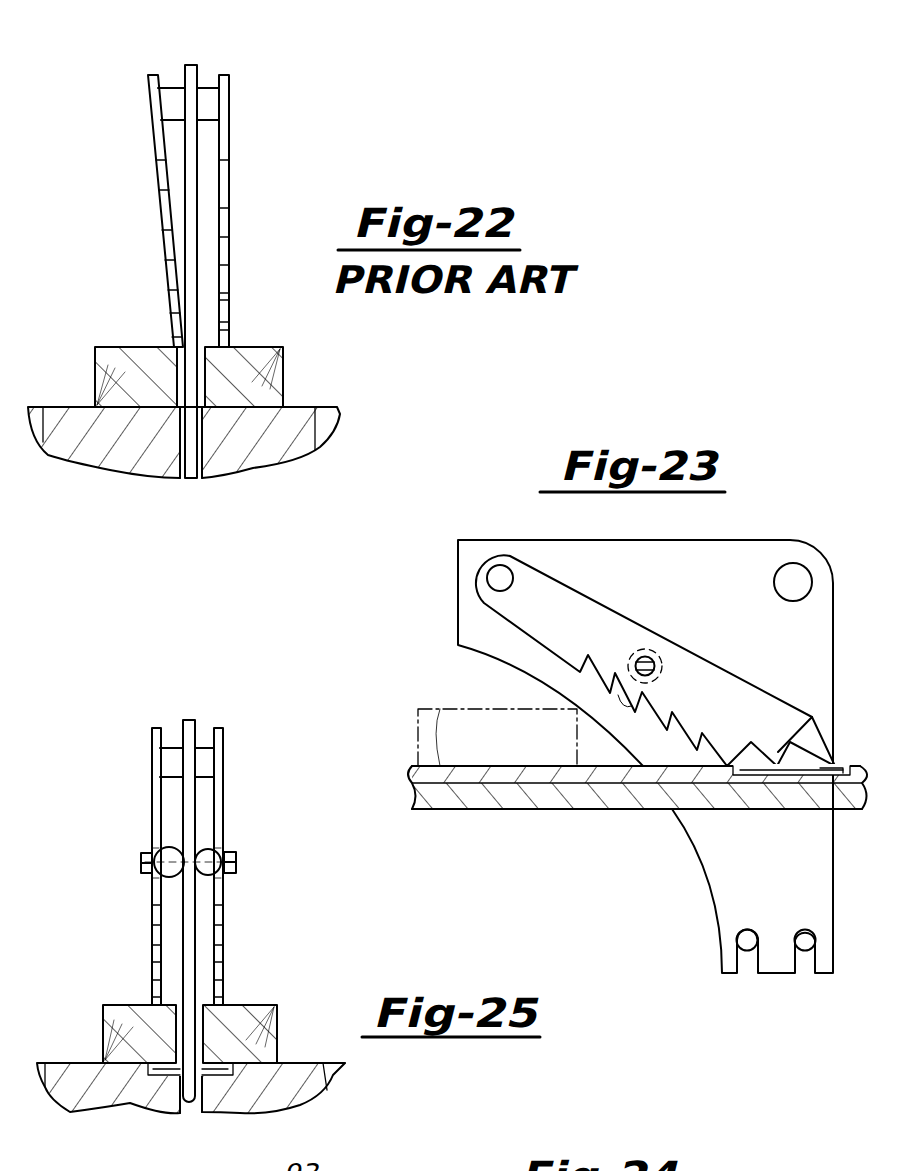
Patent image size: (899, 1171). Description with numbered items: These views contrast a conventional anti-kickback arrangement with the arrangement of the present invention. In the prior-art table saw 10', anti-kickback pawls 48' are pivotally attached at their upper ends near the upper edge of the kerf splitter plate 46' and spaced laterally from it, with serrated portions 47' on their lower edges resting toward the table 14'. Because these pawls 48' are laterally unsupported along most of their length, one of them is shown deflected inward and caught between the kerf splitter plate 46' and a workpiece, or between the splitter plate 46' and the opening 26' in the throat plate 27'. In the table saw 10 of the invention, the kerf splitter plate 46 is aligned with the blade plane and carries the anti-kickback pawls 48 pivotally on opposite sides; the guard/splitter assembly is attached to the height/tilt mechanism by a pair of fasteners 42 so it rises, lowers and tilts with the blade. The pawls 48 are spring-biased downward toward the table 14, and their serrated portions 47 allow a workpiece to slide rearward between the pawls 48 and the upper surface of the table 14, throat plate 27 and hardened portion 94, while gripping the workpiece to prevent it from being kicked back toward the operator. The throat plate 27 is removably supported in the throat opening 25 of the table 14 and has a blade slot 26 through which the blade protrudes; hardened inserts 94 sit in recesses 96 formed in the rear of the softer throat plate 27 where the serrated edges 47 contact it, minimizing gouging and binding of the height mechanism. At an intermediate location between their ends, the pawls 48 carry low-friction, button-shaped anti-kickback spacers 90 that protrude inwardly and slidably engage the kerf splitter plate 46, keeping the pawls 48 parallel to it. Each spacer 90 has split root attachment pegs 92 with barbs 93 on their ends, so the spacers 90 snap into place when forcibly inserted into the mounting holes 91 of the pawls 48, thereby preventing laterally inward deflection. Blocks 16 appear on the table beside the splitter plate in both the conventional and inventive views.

In FIG. 23, the table saw 10 is at (511, 512).
In FIG. 25, the table saw 10 is at (227, 741).
In FIG. 22, the conventional table saw 10' is at (244, 120).
In FIG. 23, the table 14 is at (637, 819).
In FIG. 25, the table 14 is at (212, 1089).
In FIG. 22, the table 14' is at (226, 420).
In FIG. 22, the mounting block 16 is at (120, 370).
In FIG. 23, the mounting block 16 is at (445, 705).
In FIG. 25, the mounting block 16 is at (110, 1017).
In FIG. 23, the throat opening 25 is at (465, 795).
In FIG. 25, the blade slot 26 is at (160, 1115).
In FIG. 22, the opening 26' is at (220, 460).
In FIG. 23, the throat plate 27 is at (636, 806).
In FIG. 25, the throat plate 27 is at (295, 1040).
In FIG. 22, the throat plate 27' is at (289, 374).
In FIG. 23, the fasteners 42 is at (808, 940).
In FIG. 23, the kerf splitter plate 46 is at (645, 734).
In FIG. 25, the kerf splitter plate 46 is at (207, 884).
In FIG. 22, the kerf splitter plate 46' is at (223, 250).
In FIG. 23, the serrated portions 47 is at (682, 660).
In FIG. 25, the serrated portions 47 is at (175, 951).
In FIG. 22, the serrated portions 47' is at (267, 302).
In FIG. 25, the anti-kickback pawls 48 is at (182, 866).
In FIG. 22, the anti-kickback pawls 48' is at (202, 211).
In FIG. 23, the anti-kickback spacers 90 is at (681, 658).
In FIG. 25, the anti-kickback spacers 90 is at (157, 887).
In FIG. 23, the mounting holes 91 is at (649, 657).
In FIG. 25, the mounting holes 91 is at (150, 886).
In FIG. 25, the attachment pegs 92 is at (150, 840).
In FIG. 23, the barbs 93 is at (638, 680).
In FIG. 25, the barbs 93 is at (143, 863).
In FIG. 23, the hardened inserts 94 is at (828, 770).
In FIG. 25, the hardened inserts 94 is at (147, 1070).
In FIG. 23, the recesses 96 is at (760, 787).
In FIG. 25, the recesses 96 is at (150, 1077).